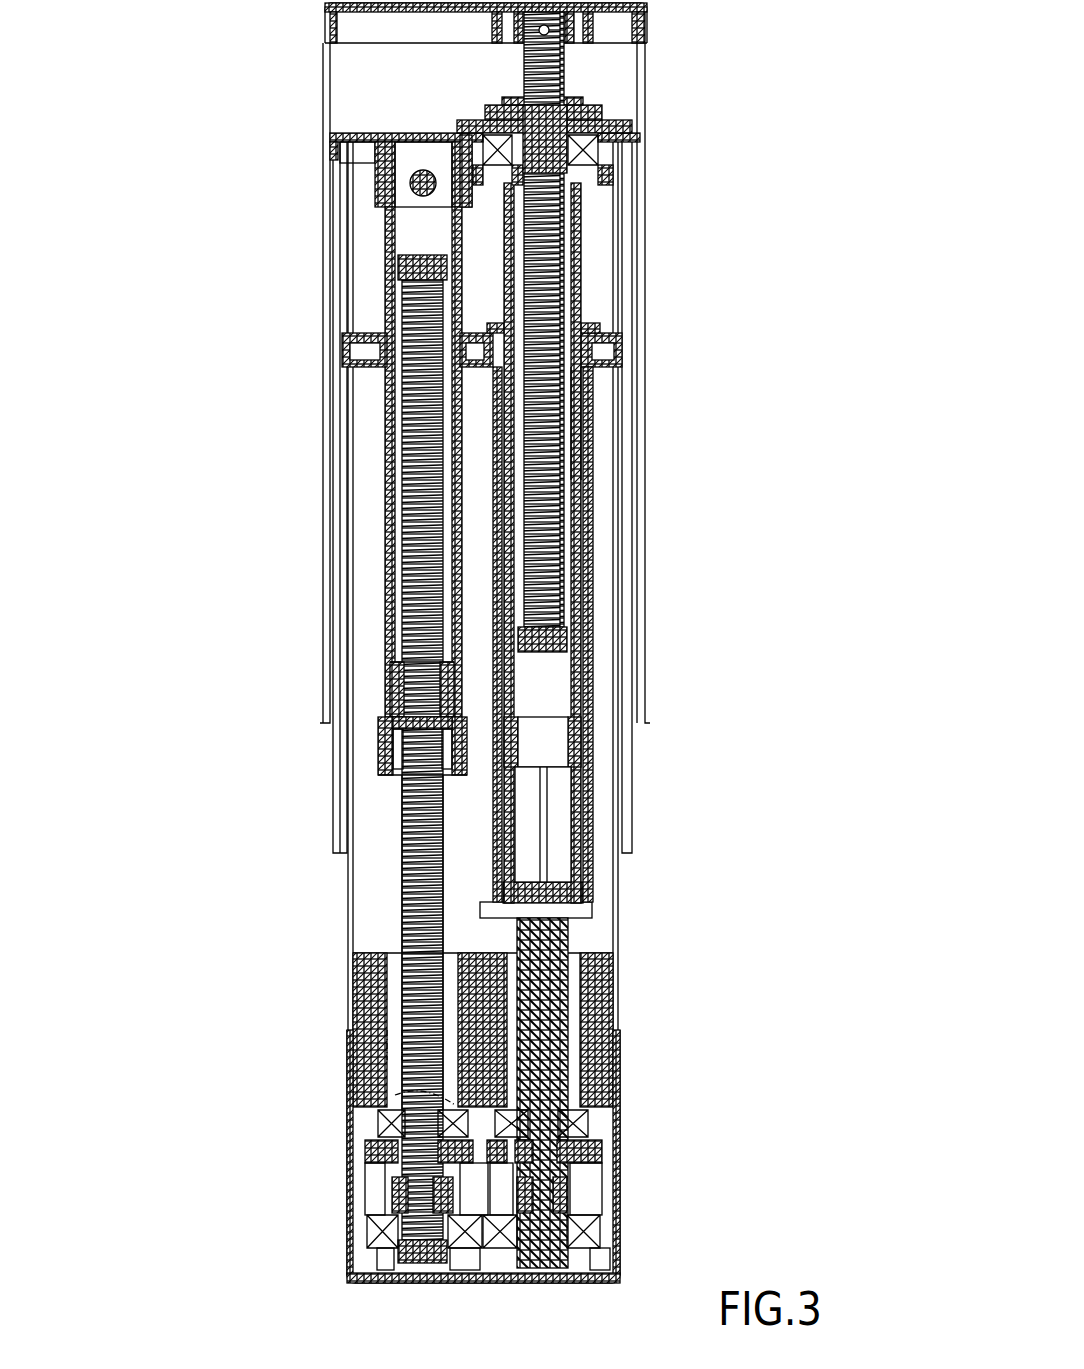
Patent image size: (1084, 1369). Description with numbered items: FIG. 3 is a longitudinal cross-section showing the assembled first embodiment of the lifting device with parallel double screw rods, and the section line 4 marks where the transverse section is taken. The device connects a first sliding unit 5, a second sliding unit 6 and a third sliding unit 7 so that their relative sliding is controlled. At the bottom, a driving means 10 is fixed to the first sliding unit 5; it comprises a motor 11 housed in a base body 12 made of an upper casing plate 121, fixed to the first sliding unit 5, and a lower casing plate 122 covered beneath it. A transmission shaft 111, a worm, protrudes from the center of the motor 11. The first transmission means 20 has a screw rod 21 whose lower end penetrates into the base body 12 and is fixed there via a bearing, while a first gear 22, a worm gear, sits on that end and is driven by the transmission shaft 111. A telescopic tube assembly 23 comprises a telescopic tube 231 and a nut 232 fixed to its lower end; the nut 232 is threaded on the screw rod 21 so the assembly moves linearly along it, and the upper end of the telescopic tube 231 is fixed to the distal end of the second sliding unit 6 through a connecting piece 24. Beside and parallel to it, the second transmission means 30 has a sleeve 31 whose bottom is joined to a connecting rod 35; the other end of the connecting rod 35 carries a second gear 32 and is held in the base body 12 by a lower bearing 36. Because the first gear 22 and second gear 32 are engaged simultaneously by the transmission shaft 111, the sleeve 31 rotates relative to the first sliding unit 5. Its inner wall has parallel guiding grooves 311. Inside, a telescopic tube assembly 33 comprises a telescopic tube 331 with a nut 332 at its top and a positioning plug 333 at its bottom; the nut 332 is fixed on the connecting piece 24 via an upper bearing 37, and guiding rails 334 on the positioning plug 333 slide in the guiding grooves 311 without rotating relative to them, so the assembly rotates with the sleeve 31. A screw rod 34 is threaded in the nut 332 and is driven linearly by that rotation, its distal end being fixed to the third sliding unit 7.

The section line 4- 4 is at (680, 750).
The first sliding unit 5 is at (348, 912).
The second sliding unit 6 is at (340, 500).
The third sliding unit 7 is at (325, 225).
The driving means 10 is at (337, 1249).
The motor 11 is at (402, 1050).
The base body 12 is at (396, 1160).
The first transmission means 20 is at (381, 577).
The screw rod 21 is at (400, 918).
The first gear 22 is at (375, 1180).
The telescopic tube assembly 23 is at (331, 690).
The connecting piece 24 is at (372, 134).
The second transmission means 30 is at (596, 513).
The sleeve 31 is at (582, 597).
The second gear 32 is at (575, 1155).
The telescopic tube assembly 33 is at (583, 285).
The screw rod 34 is at (568, 395).
The connecting rod 35 is at (552, 1000).
The lower bearing 36 is at (585, 1128).
The upper bearing 37 is at (632, 133).
The transmission shaft 111 is at (400, 1105).
The upper casing plate 121 is at (350, 1130).
The lower casing plate 122 is at (348, 1178).
The telescopic tube 231 is at (395, 606).
The nut 232 is at (378, 745).
The guiding grooves 311 is at (548, 850).
The telescopic tube 331 is at (580, 422).
The nut 332 is at (577, 207).
The positioning plug 333 is at (578, 720).
The guiding rails 334 is at (582, 762).